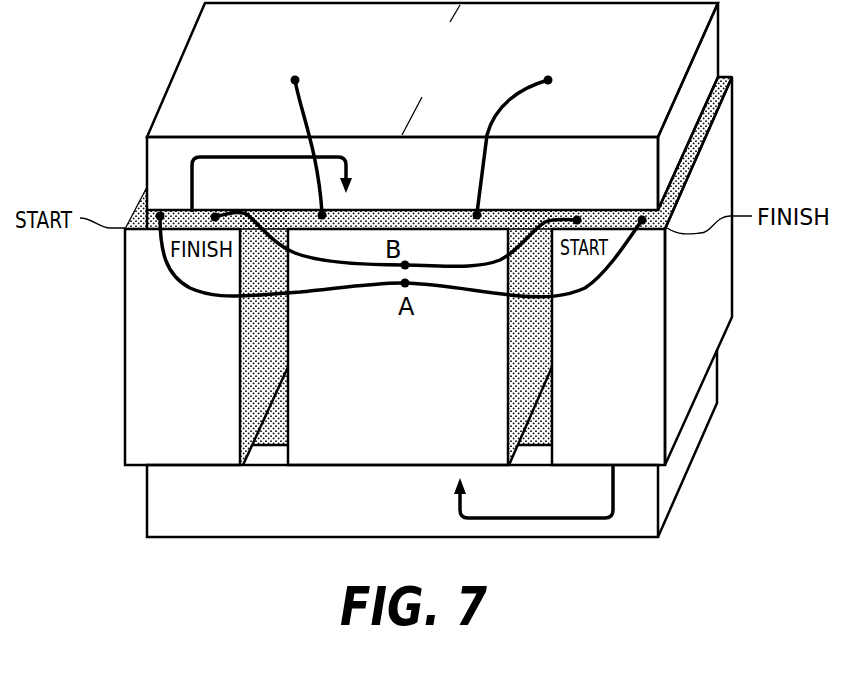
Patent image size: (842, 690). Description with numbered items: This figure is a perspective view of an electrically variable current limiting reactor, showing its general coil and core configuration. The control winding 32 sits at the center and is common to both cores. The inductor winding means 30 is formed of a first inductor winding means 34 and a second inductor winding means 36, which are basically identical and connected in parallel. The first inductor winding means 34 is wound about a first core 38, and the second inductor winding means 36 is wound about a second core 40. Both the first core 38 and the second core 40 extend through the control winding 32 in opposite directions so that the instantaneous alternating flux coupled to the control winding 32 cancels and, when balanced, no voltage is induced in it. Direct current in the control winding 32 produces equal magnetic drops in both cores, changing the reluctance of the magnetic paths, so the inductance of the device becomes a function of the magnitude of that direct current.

The inductor winding means 30 is at (145, 417).
The control winding 32 is at (407, 439).
The first inductor winding means 34 is at (195, 439).
The second inductor winding means 36 is at (622, 439).
The first core 38 is at (155, 167).
The second core 40 is at (633, 520).